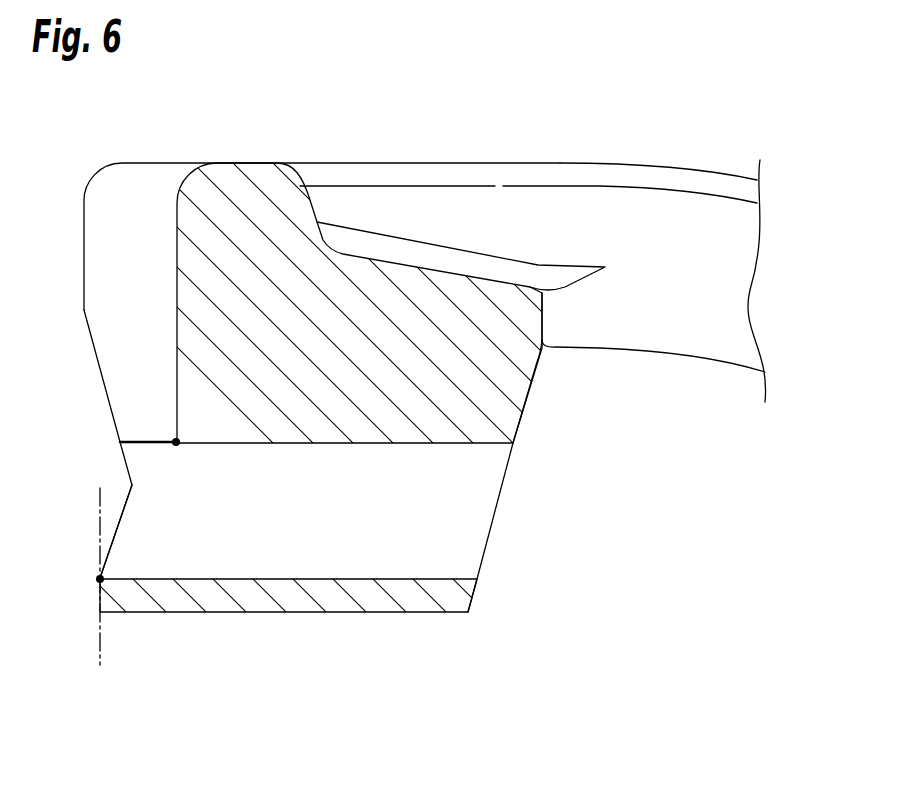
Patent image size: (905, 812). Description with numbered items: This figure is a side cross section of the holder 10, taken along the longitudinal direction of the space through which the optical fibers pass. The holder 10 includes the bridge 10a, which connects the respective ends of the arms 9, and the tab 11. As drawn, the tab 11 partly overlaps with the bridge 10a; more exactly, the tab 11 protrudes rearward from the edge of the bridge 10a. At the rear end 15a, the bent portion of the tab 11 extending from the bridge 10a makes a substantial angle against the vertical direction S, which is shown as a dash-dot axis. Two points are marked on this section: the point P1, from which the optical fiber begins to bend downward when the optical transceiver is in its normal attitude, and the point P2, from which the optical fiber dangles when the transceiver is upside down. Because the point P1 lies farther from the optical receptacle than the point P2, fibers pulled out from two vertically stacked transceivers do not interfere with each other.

The arms 9 is at (693, 340).
The holder 10 is at (400, 655).
The bridge 10a is at (248, 193).
The tab 11 is at (450, 597).
The rear end 15a is at (100, 578).
The point from which the optical fiber begins to bend downward P1 is at (100, 583).
The point from which the optical fiber dangles P2 is at (172, 440).
The vertical direction S is at (100, 515).